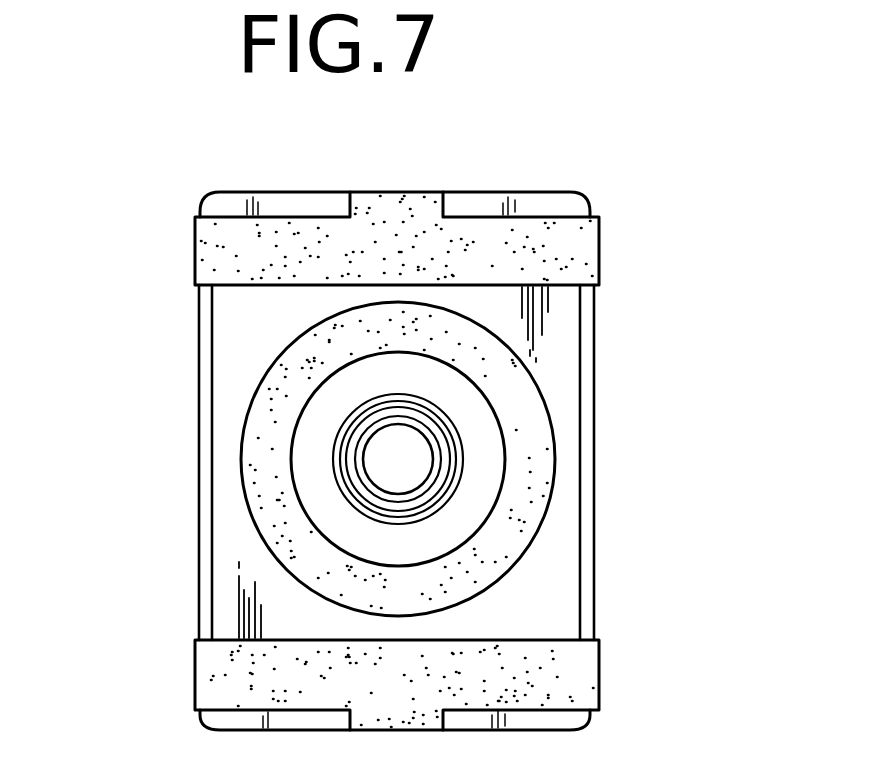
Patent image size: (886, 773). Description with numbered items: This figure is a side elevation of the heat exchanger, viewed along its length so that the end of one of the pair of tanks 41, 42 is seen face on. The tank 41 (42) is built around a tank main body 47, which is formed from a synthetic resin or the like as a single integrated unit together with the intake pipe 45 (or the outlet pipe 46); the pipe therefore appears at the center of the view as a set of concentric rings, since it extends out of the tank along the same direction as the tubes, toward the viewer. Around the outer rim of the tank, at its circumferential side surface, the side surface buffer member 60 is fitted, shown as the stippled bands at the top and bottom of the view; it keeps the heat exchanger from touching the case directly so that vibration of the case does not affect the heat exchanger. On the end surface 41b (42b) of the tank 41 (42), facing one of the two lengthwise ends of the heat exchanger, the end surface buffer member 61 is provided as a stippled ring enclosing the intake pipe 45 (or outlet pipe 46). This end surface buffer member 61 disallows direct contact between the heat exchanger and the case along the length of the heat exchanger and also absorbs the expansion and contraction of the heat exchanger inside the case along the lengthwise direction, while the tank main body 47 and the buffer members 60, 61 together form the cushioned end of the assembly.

The tank 41 is at (304, 462).
The tank 42 is at (235, 347).
The end surface 41b is at (687, 328).
The end surface 42b is at (555, 353).
The intake pipe 45 is at (576, 459).
The outlet pipe 46 is at (443, 472).
The tank main body 47 is at (237, 593).
The side surface buffer member 60 is at (582, 253).
The end surface buffer member 61 is at (493, 545).